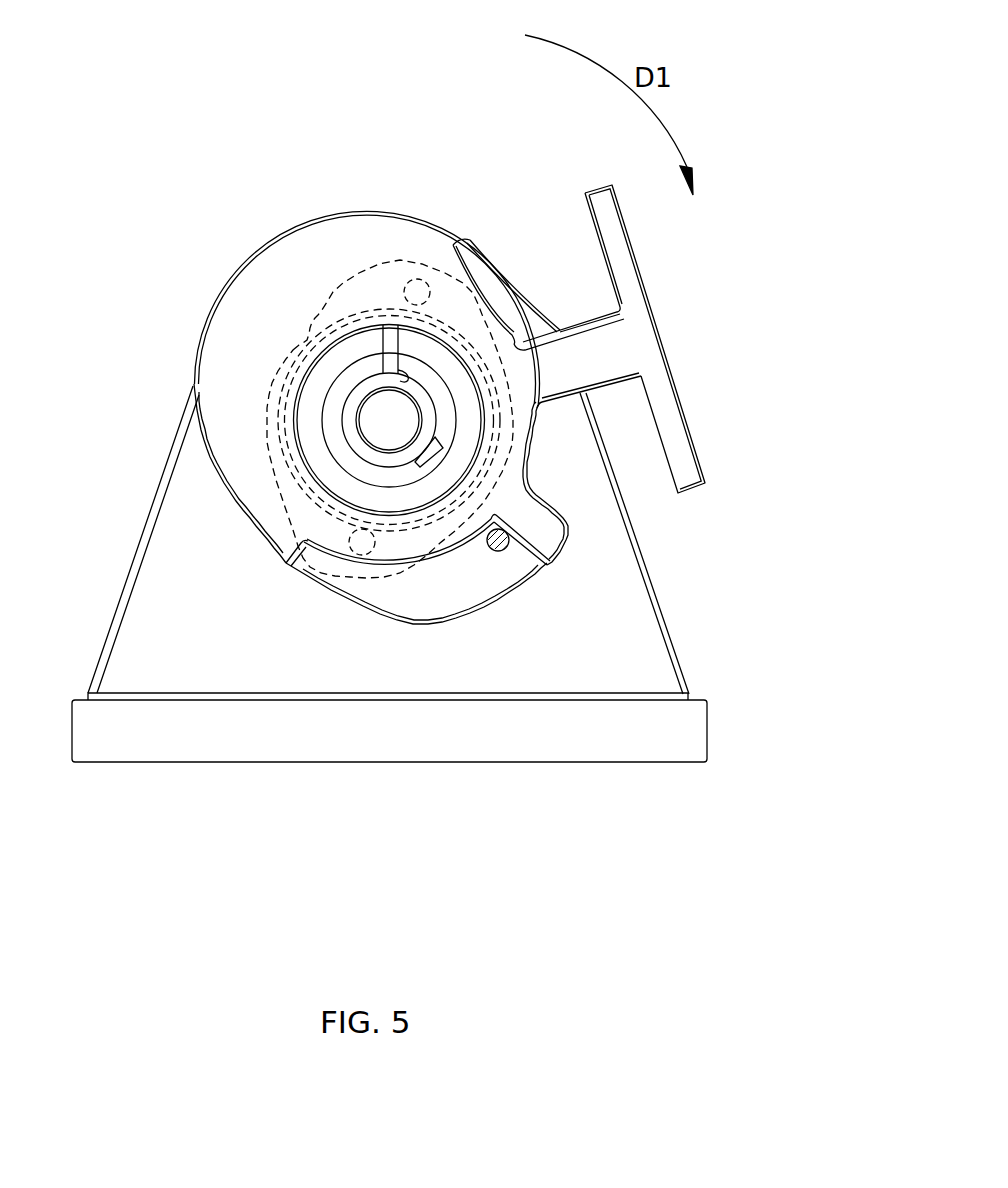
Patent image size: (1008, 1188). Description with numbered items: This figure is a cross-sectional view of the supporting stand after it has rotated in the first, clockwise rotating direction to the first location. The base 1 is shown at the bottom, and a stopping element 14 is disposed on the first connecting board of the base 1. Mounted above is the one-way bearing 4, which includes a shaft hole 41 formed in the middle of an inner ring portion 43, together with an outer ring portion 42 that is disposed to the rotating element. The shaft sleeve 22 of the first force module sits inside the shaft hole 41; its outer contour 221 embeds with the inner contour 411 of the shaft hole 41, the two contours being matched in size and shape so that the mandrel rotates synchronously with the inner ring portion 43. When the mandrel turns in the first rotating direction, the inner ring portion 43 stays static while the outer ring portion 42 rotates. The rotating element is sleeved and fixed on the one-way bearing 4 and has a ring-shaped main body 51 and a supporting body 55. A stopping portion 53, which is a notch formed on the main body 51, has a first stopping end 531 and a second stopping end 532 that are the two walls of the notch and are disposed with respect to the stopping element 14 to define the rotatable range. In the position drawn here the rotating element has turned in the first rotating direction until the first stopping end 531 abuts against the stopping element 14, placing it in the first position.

The base 1 is at (640, 648).
The stopping element 14 is at (509, 539).
The shaft sleeve 22 is at (352, 402).
The outer contour 221 is at (342, 422).
The one-way bearing 4 is at (332, 370).
The shaft hole 41 is at (383, 325).
The inner contour 411 is at (400, 330).
The outer ring portion 42 is at (442, 345).
The inner ring portion 43 is at (433, 383).
The ring-shaped main body 51 is at (268, 258).
The stopping portion 53 is at (431, 600).
The first stopping end 531 is at (527, 560).
The second stopping end 532 is at (305, 560).
The supporting body 55 is at (668, 404).